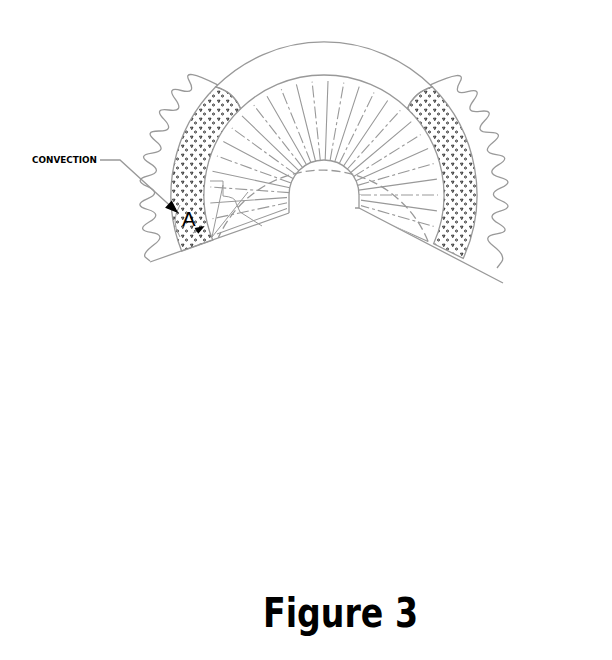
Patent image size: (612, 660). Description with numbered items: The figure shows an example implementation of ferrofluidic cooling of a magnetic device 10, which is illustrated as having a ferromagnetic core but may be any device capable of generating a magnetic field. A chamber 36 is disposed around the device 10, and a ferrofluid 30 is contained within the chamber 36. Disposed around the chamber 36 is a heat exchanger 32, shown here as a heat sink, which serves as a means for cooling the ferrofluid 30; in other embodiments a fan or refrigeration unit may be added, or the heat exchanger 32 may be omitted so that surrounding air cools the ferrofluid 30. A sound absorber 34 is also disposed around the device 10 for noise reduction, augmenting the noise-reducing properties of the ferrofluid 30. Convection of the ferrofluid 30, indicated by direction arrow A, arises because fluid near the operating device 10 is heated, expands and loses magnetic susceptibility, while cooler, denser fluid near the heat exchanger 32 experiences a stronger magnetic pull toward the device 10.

The magnetic device 10 is at (324, 164).
The ferrofluid 30 is at (463, 238).
The heat exchanger 32 is at (151, 259).
The sound absorber 34 is at (273, 75).
The chamber 36 is at (443, 247).